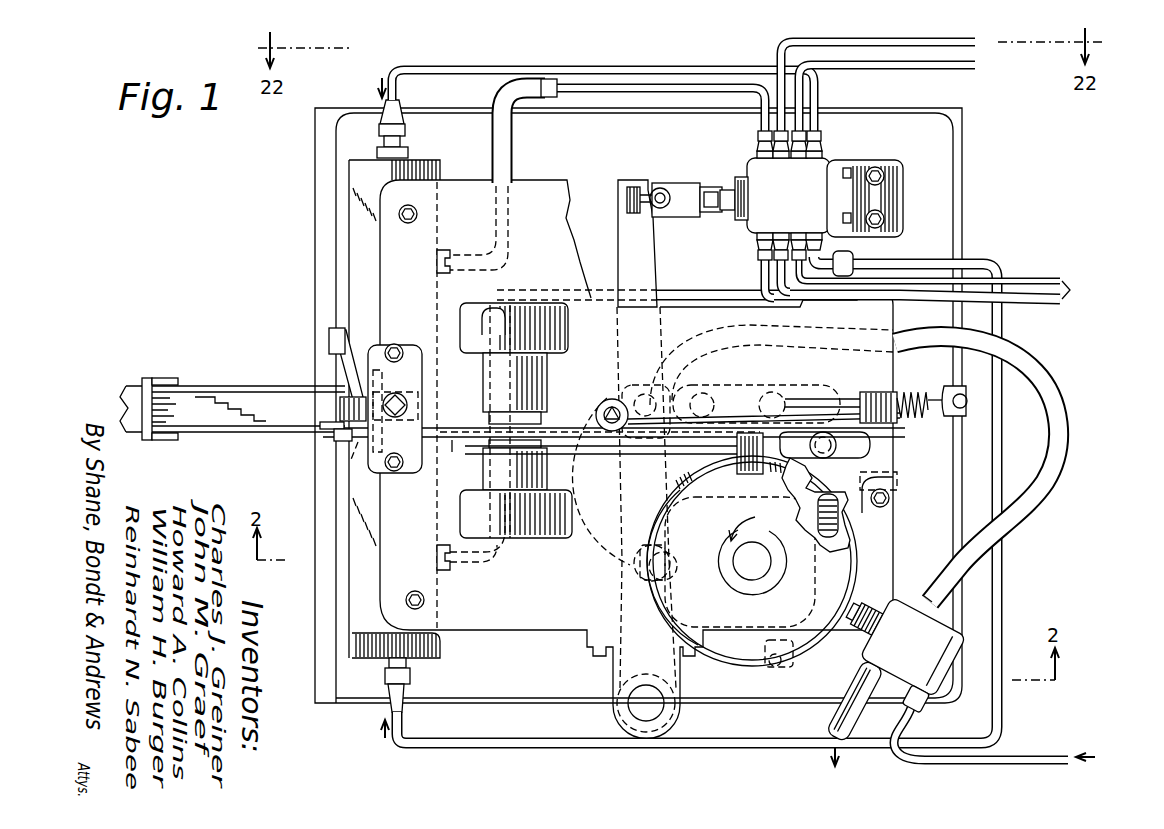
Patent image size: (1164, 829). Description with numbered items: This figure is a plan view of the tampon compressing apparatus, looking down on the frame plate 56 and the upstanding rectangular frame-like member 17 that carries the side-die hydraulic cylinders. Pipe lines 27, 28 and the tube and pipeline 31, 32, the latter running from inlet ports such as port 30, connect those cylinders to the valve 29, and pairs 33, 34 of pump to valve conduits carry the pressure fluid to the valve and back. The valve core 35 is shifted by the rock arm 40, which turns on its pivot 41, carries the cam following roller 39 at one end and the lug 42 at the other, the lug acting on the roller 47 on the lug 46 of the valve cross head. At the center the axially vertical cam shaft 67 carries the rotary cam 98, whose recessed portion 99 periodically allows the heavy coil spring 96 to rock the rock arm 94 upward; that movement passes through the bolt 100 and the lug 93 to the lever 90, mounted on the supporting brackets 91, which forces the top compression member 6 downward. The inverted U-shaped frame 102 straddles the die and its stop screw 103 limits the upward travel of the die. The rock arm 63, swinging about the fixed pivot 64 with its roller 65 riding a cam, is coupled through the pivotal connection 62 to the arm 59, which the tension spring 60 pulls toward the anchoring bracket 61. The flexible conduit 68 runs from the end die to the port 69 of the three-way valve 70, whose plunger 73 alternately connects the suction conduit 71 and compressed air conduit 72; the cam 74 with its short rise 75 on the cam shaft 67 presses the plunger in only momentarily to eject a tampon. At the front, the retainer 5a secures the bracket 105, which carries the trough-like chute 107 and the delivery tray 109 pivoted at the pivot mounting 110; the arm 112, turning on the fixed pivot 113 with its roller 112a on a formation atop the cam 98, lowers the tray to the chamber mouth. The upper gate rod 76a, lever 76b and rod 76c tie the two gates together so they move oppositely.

The retainer 5a is at (342, 448).
The compression member 6 is at (355, 456).
The frame-like member 17 is at (352, 222).
The pipe line 27 is at (465, 70).
The pipe line 28 is at (510, 748).
The valve 29 is at (823, 165).
The inlet port 30 is at (452, 566).
The tube 31 is at (547, 96).
The pipeline 32 is at (720, 292).
The pair of pump to valve conduits 33 is at (978, 50).
The pair of pump to valve conduits 34 is at (1070, 290).
The valve core 35 is at (734, 188).
The cam following roller 39 is at (628, 570).
The rock arm 40 is at (632, 230).
The pivot 41 is at (640, 385).
The lug 42 is at (627, 190).
The lug 46 is at (704, 188).
The roller 47 is at (660, 185).
The frame plate 56 is at (527, 627).
The arm 59 is at (760, 385).
The tension spring 60 is at (906, 418).
The anchoring bracket 61 is at (962, 392).
The pivotal connection 62 is at (706, 390).
The rock arm 63 is at (628, 528).
The fixed pivot 64 is at (670, 708).
The roller 65 is at (695, 573).
The cam shaft 67 is at (771, 565).
The flexible conduit 68 is at (1022, 348).
The port 69 is at (928, 598).
The three-way valve 70 is at (895, 676).
The conduit 71 is at (855, 701).
The conduit 72 is at (925, 720).
The plunger 73 is at (863, 617).
The cam 74 is at (850, 530).
The rise 75 is at (865, 512).
The rod 76a is at (370, 404).
The lever 76b is at (347, 345).
The rod 76c is at (328, 342).
The lever 90 is at (462, 427).
The supporting brackets 91 is at (570, 508).
The lug 93 is at (608, 402).
The rock arm 94 is at (580, 452).
The coil spring 96 is at (835, 452).
The rotary cam 98 is at (705, 664).
The recessed portion 99 is at (770, 668).
The bolt 100 is at (600, 412).
The inverted U-shaped frame 102 is at (422, 346).
The stop screw 103 is at (405, 404).
The bracket 105 is at (337, 446).
The trough-like chute 107 is at (135, 384).
The delivery tray 109 is at (195, 386).
The pivot mounting 110 is at (152, 440).
The arm 112 is at (456, 440).
The roller 112a is at (744, 476).
The fixed pivot 113 is at (895, 455).